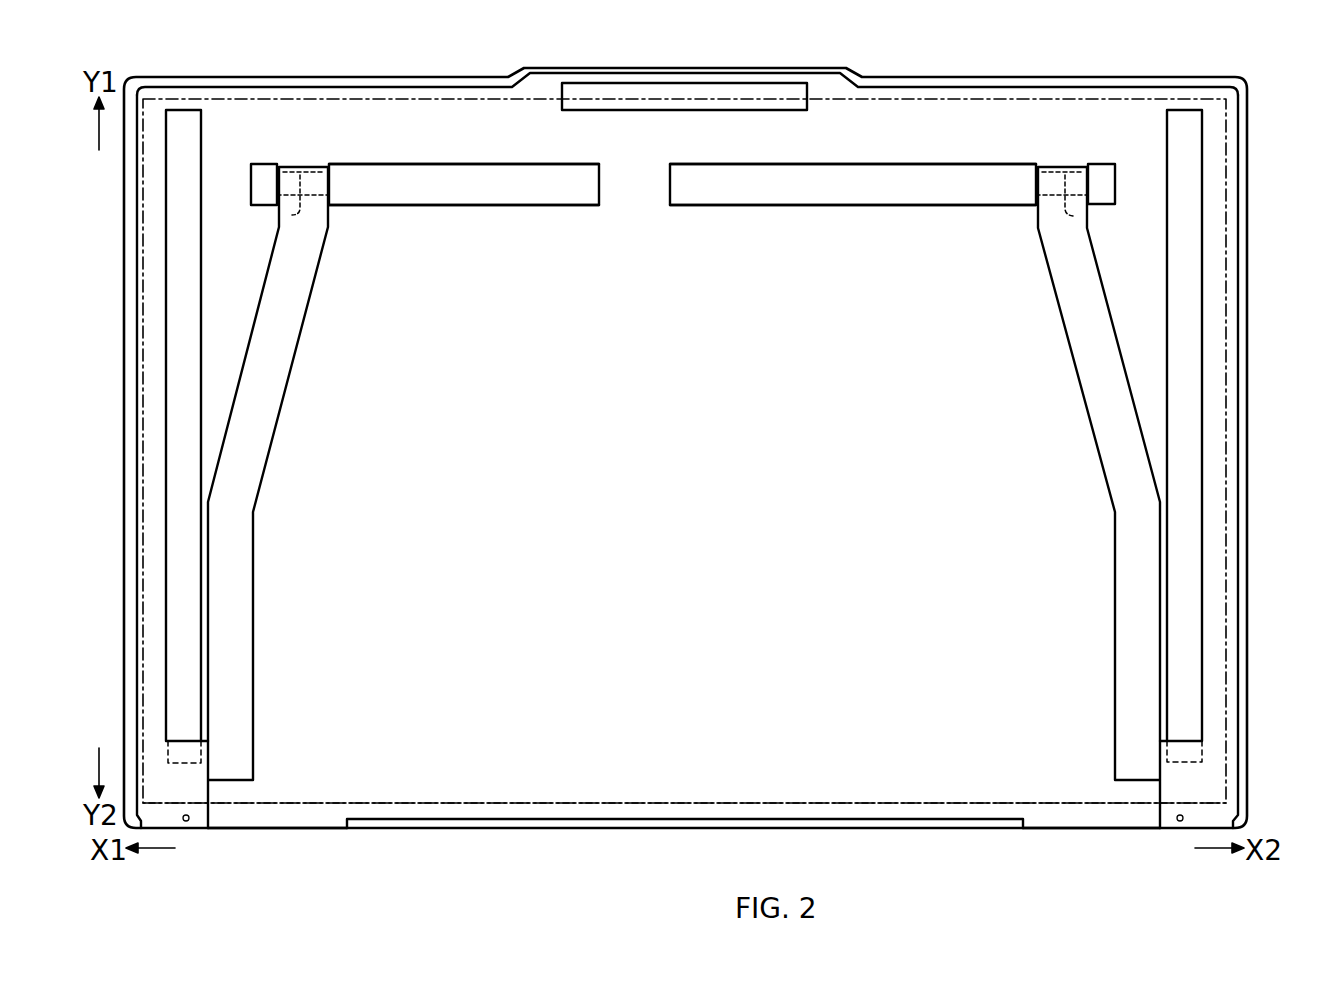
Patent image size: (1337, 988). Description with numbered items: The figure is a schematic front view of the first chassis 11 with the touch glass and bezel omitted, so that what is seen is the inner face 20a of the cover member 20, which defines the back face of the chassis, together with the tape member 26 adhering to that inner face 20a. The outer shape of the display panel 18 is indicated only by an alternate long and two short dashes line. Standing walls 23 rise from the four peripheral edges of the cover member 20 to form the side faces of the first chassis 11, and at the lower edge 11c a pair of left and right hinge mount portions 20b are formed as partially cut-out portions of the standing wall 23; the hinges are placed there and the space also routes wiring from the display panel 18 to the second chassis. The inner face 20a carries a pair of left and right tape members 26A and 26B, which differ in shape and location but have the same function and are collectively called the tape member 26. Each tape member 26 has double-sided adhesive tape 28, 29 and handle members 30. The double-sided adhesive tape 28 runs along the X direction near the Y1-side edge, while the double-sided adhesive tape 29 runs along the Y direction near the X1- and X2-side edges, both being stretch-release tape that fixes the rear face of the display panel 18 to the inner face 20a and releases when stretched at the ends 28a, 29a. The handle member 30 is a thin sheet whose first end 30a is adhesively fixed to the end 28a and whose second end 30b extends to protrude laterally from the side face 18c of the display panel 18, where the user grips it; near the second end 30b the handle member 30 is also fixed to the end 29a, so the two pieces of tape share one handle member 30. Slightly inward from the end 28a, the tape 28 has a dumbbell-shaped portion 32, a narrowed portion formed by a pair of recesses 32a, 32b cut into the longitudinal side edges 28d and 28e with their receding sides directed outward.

The first chassis 11 is at (92, 45).
The lower edge 11c is at (510, 823).
The display panel 18 is at (384, 90).
The side face 18c is at (413, 803).
The cover member 20 is at (684, 448).
The inner face 20a is at (227, 113).
The hinge mount portions 20b is at (300, 828).
The standing walls 23 is at (649, 488).
The tape member 26 is at (682, 224).
The tape member 26A is at (712, 214).
The tape member 26B is at (573, 214).
The double-sided adhesive tape 28 is at (690, 158).
The end 28a is at (262, 185).
The side edge 28d is at (487, 165).
The side edge 28e is at (481, 207).
The double-sided adhesive tape 29 is at (690, 440).
The end 29a is at (185, 752).
The handle member 30 is at (685, 457).
The first end 30a is at (302, 185).
The second end 30b is at (190, 828).
The dumbbell-shaped portion 32 is at (689, 134).
The recess 32a is at (317, 163).
The recess 32b is at (292, 215).